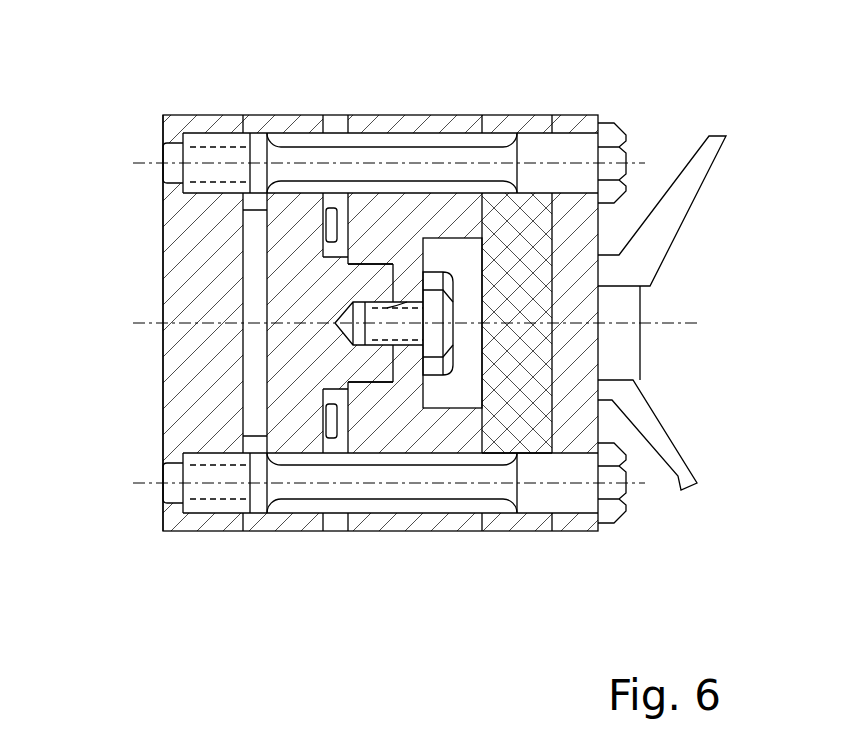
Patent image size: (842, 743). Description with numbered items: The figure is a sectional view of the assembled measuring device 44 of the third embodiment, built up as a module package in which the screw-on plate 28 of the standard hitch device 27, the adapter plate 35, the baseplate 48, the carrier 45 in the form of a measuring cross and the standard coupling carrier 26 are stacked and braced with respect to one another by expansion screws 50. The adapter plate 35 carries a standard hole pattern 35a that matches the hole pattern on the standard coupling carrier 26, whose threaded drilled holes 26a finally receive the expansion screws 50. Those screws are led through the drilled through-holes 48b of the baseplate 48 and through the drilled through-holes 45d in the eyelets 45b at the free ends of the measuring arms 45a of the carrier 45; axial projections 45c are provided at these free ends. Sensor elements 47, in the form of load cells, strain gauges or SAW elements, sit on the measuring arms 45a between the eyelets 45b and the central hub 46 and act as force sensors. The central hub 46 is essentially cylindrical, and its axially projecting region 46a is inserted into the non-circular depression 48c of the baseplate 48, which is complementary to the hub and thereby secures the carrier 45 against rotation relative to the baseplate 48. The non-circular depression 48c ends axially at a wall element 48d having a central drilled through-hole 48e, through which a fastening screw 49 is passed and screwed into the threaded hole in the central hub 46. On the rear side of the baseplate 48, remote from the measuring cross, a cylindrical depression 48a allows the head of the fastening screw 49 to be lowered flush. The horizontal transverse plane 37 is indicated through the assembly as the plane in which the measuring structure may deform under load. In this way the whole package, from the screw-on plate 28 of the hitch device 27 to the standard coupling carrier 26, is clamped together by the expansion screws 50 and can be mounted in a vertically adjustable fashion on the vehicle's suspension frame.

The standard coupling carrier 26 is at (190, 296).
The threaded drilled holes 26a is at (164, 152).
The standard hitch device 27 is at (683, 222).
The screw-on plate 28 is at (559, 259).
The adapter plate 35 is at (502, 259).
The standard hole pattern 35a is at (528, 453).
The horizontal transverse plane 37 is at (671, 324).
The measuring device 44 is at (500, 80).
The carrier in the form of a measuring cross 45 is at (307, 296).
The measuring arms 45a is at (283, 243).
The eyelets 45b is at (308, 115).
The axial projections 45c is at (247, 212).
The drilled through-holes 45d is at (280, 115).
The central hub 46 is at (380, 367).
The axially projecting region 46a is at (377, 252).
The sensor elements 47 is at (338, 217).
The baseplate 48 is at (398, 231).
The cylindrical depression 48a is at (434, 268).
The drilled through-holes 48b is at (455, 132).
The non-circular depression 48c is at (374, 378).
The wall element 48d is at (420, 370).
The central drilled through-hole 48e is at (325, 312).
The fastening screw 49 is at (455, 353).
The expansion screws 50 is at (500, 155).